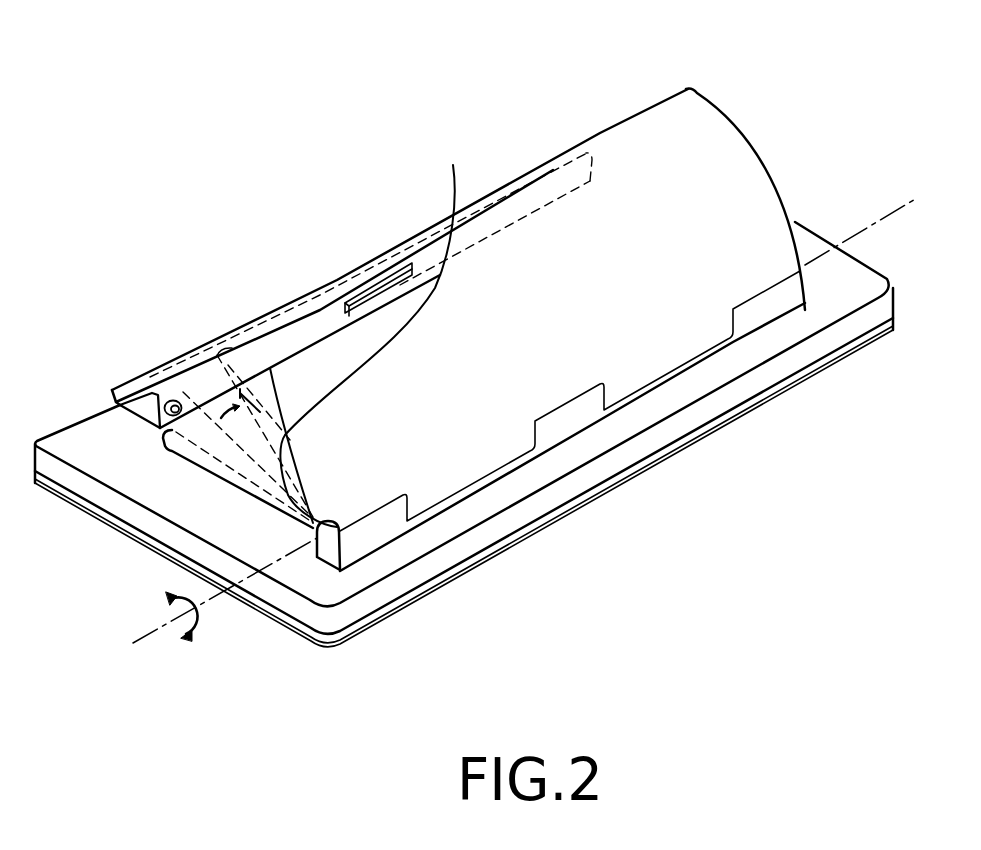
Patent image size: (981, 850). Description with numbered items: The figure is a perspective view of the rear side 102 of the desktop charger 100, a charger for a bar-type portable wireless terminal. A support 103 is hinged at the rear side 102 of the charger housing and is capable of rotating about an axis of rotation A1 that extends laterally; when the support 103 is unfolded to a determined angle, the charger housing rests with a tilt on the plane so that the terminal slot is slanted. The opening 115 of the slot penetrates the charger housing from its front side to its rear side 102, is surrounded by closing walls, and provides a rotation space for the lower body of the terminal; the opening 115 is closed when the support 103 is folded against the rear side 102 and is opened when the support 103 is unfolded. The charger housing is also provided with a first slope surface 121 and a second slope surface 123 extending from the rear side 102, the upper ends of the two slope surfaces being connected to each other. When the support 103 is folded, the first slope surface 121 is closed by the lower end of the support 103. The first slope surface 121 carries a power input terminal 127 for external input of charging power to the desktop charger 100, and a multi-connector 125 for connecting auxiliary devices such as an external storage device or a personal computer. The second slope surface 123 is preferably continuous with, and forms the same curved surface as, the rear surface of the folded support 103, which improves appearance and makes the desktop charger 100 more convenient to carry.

The desktop charger 100 is at (171, 110).
The rear side 102 is at (68, 432).
The support 103 is at (665, 120).
The opening 115 is at (222, 463).
The first slope surface 121 is at (290, 333).
The second slope surface 123 is at (155, 388).
The multi-connector 125 is at (385, 272).
The power input terminal 127 is at (186, 396).
The axis of rotation A1 is at (157, 633).